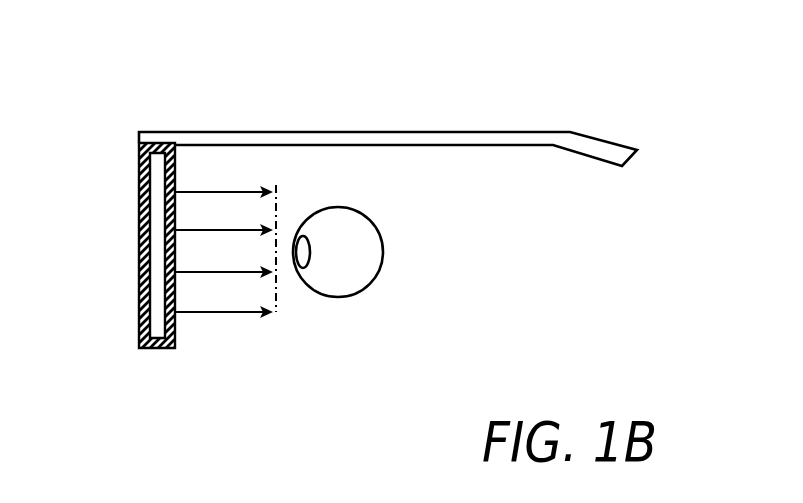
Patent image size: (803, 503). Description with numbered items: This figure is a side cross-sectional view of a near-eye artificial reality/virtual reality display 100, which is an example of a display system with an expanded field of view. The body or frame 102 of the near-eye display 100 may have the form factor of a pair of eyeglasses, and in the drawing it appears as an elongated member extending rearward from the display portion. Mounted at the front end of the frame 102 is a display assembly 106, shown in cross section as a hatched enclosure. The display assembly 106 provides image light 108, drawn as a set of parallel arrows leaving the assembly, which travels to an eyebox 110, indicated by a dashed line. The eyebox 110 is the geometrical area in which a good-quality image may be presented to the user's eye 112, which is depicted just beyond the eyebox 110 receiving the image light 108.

The near-eye artificial reality/virtual reality display 100 is at (175, 85).
The frame 102 is at (429, 133).
The display assembly 106 is at (158, 224).
The image light 108 is at (244, 333).
The eyebox 110 is at (277, 301).
The user's eye 112 is at (372, 259).